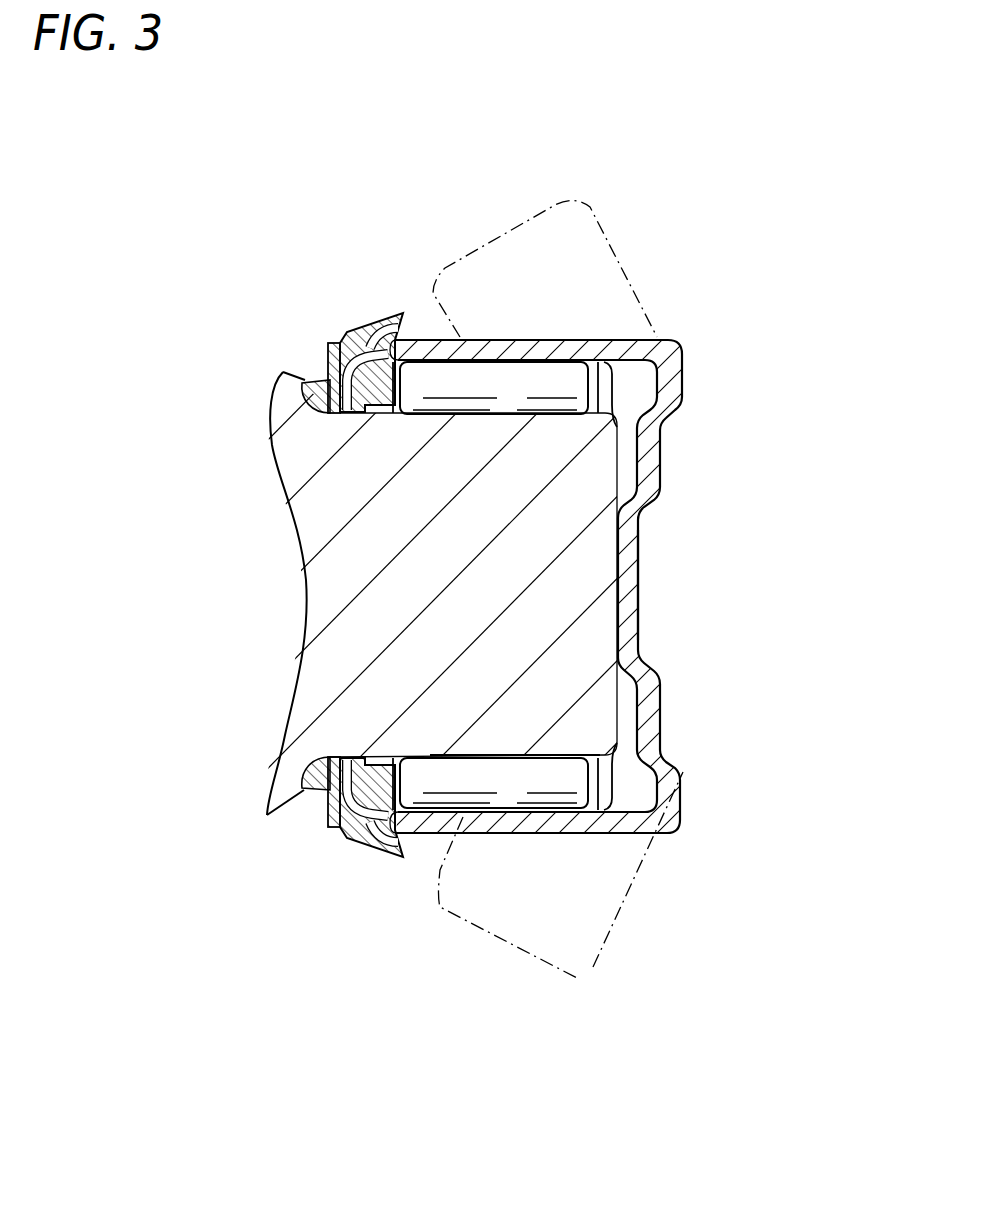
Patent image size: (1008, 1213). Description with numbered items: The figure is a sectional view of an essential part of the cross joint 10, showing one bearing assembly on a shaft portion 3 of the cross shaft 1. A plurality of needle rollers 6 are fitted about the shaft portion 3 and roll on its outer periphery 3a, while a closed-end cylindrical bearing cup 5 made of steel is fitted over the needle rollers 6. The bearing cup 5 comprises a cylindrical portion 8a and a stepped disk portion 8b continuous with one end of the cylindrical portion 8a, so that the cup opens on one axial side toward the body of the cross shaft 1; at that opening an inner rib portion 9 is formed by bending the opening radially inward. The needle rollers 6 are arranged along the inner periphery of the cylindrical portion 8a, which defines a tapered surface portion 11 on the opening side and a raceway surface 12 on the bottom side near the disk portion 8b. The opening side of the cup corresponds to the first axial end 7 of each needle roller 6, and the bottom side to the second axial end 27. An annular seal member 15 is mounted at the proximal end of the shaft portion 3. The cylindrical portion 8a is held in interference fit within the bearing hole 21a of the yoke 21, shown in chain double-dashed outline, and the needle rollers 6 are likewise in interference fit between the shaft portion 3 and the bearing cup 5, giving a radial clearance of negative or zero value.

The cross shaft 1 is at (296, 379).
The shaft portion 3 is at (597, 638).
The outer periphery 3a is at (576, 772).
The bearing cup 5 is at (682, 352).
The needle roller 6 is at (568, 378).
The first axial end 7 is at (358, 846).
The cylindrical portion 8a is at (535, 340).
The stepped disk portion 8b is at (640, 548).
The inner rib portion 9 is at (365, 326).
The cross joint 10 is at (716, 308).
The tapered surface portion 11 is at (428, 822).
The raceway surface 12 is at (557, 803).
The annular seal member 15 is at (358, 338).
The yoke 21 is at (558, 217).
The bearing hole 21a is at (437, 907).
The second axial end 27 is at (587, 787).